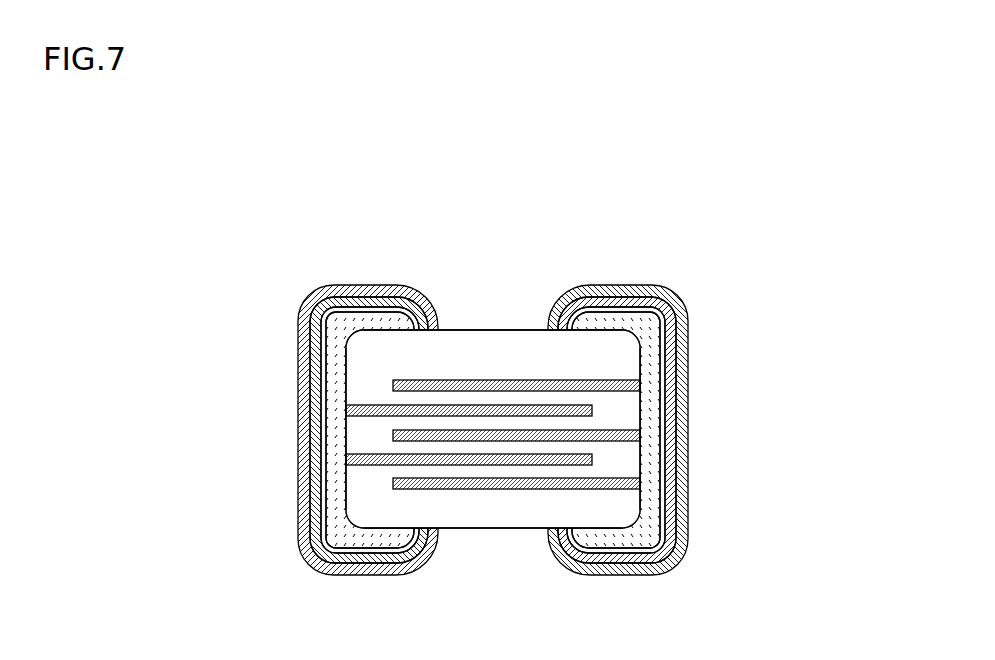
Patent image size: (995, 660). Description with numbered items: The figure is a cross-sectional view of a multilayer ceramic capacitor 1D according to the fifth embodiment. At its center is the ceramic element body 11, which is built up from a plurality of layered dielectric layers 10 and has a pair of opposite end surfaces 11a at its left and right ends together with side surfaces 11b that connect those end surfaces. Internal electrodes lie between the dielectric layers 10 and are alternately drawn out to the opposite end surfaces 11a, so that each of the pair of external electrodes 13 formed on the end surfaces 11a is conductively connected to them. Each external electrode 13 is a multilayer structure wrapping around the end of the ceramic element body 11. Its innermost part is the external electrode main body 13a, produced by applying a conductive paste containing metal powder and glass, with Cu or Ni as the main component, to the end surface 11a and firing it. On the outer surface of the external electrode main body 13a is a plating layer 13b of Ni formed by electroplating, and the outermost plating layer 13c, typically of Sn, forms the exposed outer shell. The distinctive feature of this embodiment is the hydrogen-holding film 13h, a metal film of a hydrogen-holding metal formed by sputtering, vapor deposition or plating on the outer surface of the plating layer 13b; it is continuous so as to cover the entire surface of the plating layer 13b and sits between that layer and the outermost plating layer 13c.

The multilayer ceramic capacitor 1D is at (232, 158).
The dielectric layer 10 is at (427, 422).
The ceramic element body 11 is at (509, 322).
The end surface 11a is at (335, 474).
The side surface 11b is at (527, 330).
The external electrode 13 is at (501, 411).
The external electrode main body 13a is at (303, 340).
The plating layer 13b is at (313, 312).
The outermost plating layer 13c is at (322, 294).
The hydrogen-holding film 13h is at (298, 350).